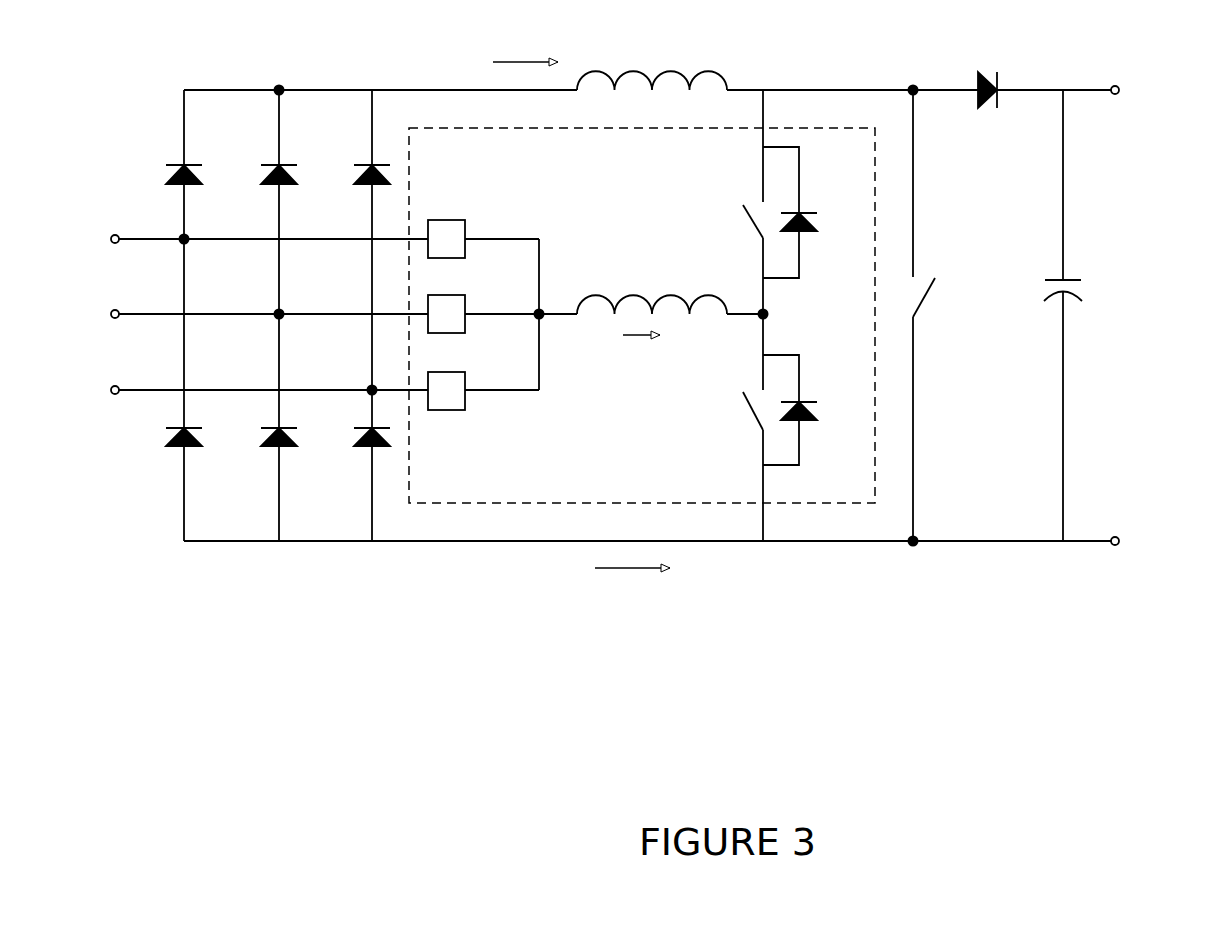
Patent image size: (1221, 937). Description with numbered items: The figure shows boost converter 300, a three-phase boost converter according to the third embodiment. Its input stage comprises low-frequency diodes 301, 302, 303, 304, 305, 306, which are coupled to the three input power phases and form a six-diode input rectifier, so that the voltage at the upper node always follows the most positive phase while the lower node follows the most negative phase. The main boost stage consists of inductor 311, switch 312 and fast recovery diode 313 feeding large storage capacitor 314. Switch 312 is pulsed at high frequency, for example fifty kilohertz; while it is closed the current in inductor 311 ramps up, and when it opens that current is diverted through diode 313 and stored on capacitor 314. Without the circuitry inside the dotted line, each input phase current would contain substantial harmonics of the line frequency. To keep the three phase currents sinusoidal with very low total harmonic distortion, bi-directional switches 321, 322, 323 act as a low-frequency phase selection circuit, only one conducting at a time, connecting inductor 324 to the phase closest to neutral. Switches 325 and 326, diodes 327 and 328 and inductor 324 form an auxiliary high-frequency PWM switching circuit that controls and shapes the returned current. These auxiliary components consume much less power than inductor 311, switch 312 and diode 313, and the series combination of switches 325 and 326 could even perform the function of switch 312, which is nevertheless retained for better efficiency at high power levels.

The boost converter 300 is at (352, 636).
The low-frequency diode 301 is at (207, 187).
The low-frequency diode 302 is at (301, 187).
The low-frequency diode 303 is at (353, 163).
The low-frequency diode 304 is at (207, 449).
The low-frequency diode 305 is at (301, 449).
The low-frequency diode 306 is at (352, 427).
The inductor 311 is at (633, 70).
The switch 312 is at (937, 279).
The fast recovery diode 313 is at (978, 72).
The storage capacitor 314 is at (1082, 279).
The bi-directional switch 321 is at (468, 220).
The bi-directional switch 322 is at (468, 295).
The bi-directional switch 323 is at (468, 372).
The inductor 324 is at (633, 296).
The switch 325 is at (742, 204).
The switch 326 is at (742, 392).
The diode 327 is at (818, 210).
The diode 328 is at (818, 399).